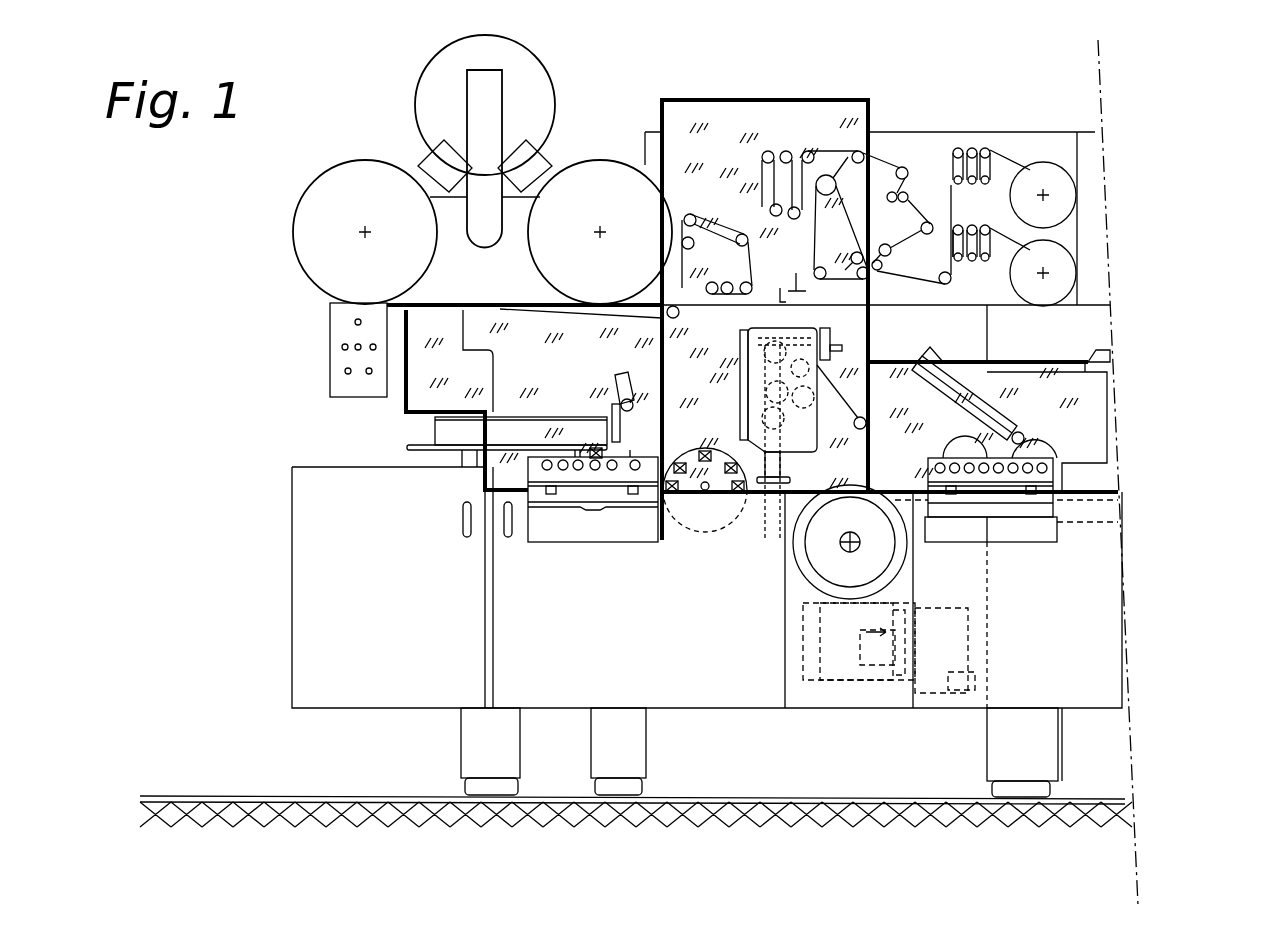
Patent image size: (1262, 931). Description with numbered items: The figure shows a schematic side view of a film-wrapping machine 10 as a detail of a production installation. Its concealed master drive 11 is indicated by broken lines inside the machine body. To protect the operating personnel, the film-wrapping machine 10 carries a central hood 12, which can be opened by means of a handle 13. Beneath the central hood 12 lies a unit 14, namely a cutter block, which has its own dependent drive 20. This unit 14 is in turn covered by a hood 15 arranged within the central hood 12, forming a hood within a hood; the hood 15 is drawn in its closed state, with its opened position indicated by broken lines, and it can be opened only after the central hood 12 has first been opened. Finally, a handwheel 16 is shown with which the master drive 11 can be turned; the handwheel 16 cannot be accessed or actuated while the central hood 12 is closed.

The film-wrapping machine 10 is at (907, 92).
The master drive 11 is at (843, 682).
The central hood 12 is at (743, 98).
The handle 13 is at (775, 520).
The unit 14 is at (760, 347).
The hood 15 is at (830, 331).
The handwheel 16 is at (905, 560).
The dependent drive 20 is at (760, 397).